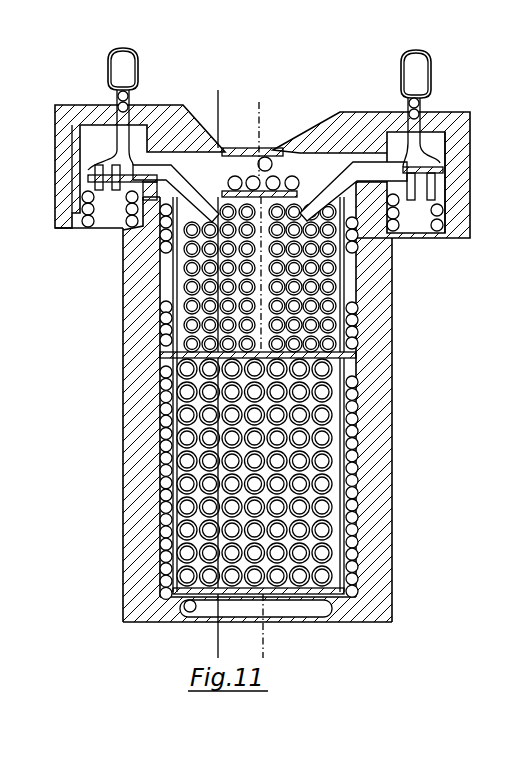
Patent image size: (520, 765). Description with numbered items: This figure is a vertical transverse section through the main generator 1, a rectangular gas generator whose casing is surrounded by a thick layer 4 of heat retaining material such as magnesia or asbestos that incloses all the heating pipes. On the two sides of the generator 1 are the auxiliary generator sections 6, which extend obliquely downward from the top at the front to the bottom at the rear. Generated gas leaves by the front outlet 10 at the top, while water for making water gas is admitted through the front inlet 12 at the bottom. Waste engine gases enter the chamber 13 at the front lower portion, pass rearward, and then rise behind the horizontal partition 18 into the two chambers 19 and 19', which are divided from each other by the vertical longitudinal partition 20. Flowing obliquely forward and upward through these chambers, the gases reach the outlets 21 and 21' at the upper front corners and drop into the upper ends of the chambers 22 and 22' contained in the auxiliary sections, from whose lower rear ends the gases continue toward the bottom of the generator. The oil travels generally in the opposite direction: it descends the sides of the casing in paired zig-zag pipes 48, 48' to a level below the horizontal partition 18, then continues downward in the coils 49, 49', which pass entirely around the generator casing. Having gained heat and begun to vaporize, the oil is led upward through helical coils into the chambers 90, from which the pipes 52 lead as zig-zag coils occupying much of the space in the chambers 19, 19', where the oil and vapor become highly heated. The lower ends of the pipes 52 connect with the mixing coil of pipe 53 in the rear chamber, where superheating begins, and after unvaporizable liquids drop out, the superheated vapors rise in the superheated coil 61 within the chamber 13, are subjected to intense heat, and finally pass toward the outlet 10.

The main generator 1 is at (393, 572).
The layer of heat retaining material 4 is at (123, 546).
The auxiliary generator sections 6 is at (56, 111).
The front outlet 10 is at (211, 366).
The front inlet 12 is at (272, 371).
The chamber 13 is at (380, 477).
The horizontal partition 18 is at (172, 354).
The chamber 19 is at (170, 278).
The chamber 19' is at (347, 278).
The vertical longitudinal partition 20 is at (283, 177).
The outlet 21 is at (176, 189).
The outlet 21' is at (353, 189).
The chamber 22 is at (109, 137).
The chamber 22' is at (428, 140).
The oil pipes 48 is at (391, 407).
The oil pipes 48' is at (394, 293).
The coils 49 is at (121, 401).
The coils 49' is at (118, 418).
The pipes 52 is at (178, 281).
The mixing coil of pipe 53 is at (325, 383).
The superheated coil 61 is at (366, 522).
The chamber 90 is at (100, 157).